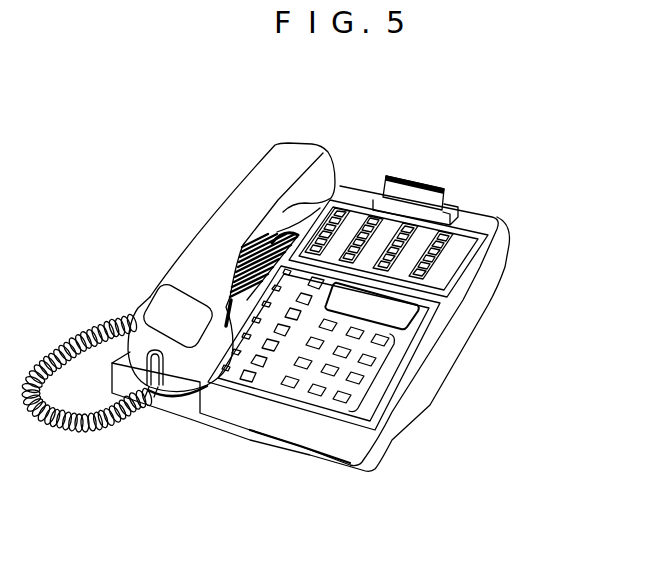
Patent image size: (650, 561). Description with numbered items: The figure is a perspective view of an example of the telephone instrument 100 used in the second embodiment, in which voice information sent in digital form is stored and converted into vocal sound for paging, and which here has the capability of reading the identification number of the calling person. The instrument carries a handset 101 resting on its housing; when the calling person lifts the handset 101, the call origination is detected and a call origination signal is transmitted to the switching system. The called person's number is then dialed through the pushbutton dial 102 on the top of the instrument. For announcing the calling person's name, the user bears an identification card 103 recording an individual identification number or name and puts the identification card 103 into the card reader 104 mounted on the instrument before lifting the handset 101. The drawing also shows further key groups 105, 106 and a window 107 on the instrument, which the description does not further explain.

The telephone instrument 100 is at (404, 427).
The handset 101 is at (292, 146).
The pushbutton dial 102 is at (385, 371).
The identification card 103 is at (404, 177).
The card reader 104 is at (447, 205).
The function keys 105 is at (228, 378).
The memory key panel 106 is at (483, 237).
The display window 107 is at (418, 310).